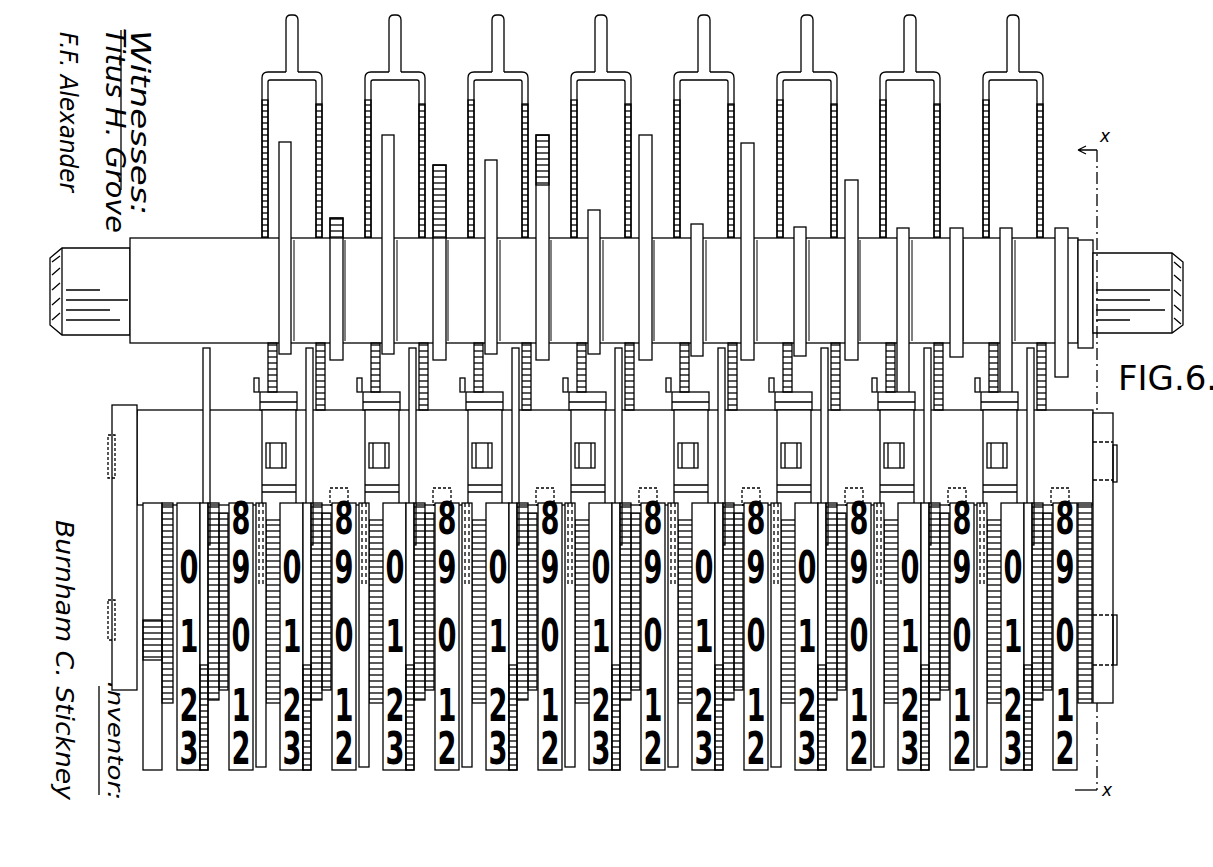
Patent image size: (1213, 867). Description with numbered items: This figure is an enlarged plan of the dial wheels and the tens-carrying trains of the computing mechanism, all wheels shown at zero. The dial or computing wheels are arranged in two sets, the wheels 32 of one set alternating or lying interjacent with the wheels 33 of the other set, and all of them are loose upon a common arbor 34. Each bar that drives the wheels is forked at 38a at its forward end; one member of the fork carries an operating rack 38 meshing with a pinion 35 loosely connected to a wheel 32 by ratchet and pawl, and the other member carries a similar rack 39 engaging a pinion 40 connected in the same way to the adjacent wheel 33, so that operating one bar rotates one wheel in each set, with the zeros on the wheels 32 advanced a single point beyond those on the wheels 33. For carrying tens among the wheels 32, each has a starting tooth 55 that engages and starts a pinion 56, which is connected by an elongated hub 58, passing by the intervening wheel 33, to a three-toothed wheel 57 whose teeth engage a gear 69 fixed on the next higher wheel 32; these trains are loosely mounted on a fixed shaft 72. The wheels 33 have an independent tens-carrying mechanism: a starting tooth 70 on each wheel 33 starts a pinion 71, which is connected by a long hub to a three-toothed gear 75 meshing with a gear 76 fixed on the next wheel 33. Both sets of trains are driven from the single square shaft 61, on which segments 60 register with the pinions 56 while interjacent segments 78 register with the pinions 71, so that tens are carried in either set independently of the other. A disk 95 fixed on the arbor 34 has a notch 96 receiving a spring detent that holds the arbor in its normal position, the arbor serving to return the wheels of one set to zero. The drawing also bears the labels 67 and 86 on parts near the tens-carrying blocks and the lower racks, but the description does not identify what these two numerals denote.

The dial wheel 32 is at (1016, 770).
The dial wheel 33 is at (1063, 770).
The arbor 34 is at (108, 612).
The pinion 35 is at (616, 649).
The operating rack 38 is at (266, 132).
The fork 38a is at (299, 70).
The rack 39 is at (321, 124).
The pinion 40 is at (634, 619).
The starting tooth 55 is at (1000, 496).
The pinion 56 is at (1008, 392).
The three-toothed wheel 57 is at (932, 386).
The hub 58 is at (614, 457).
The segment 60 is at (1006, 226).
The square shaft 61 is at (96, 318).
The block 67 is at (1000, 450).
The gear 69 is at (740, 494).
The starting tooth 70 is at (1061, 492).
The pinion 71 is at (936, 395).
The fixed shaft 72 is at (110, 450).
The three-toothed gear 75 is at (826, 392).
The gear 76 is at (621, 648).
The segment 78 is at (1061, 226).
The rack 86 is at (150, 580).
The disk 95 is at (148, 552).
The notch 96 is at (148, 636).